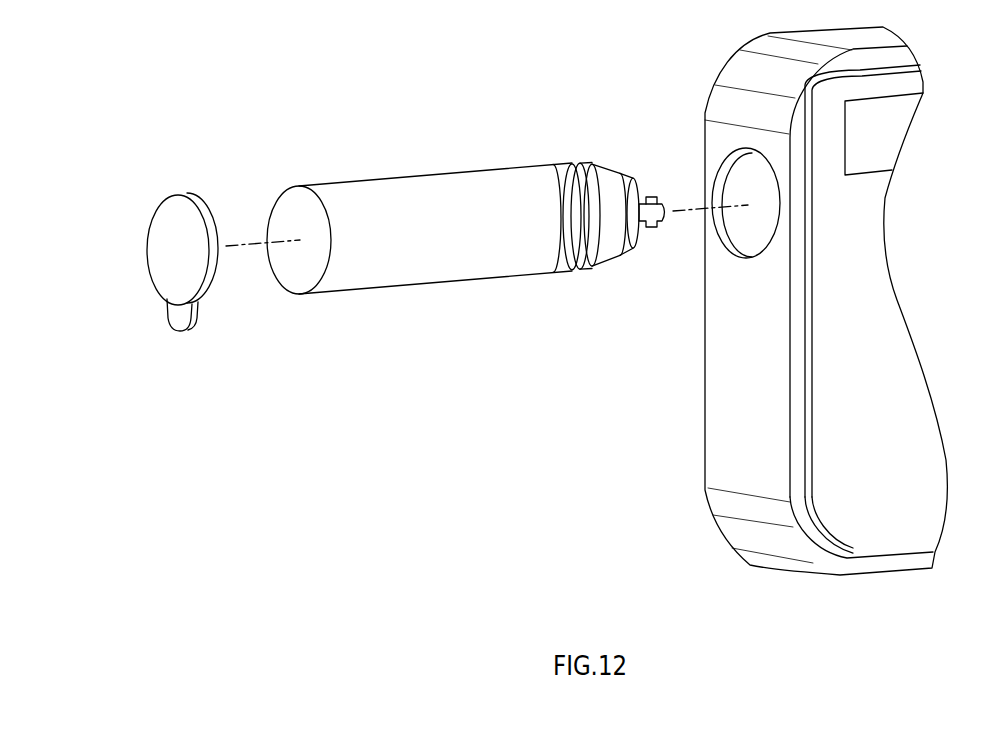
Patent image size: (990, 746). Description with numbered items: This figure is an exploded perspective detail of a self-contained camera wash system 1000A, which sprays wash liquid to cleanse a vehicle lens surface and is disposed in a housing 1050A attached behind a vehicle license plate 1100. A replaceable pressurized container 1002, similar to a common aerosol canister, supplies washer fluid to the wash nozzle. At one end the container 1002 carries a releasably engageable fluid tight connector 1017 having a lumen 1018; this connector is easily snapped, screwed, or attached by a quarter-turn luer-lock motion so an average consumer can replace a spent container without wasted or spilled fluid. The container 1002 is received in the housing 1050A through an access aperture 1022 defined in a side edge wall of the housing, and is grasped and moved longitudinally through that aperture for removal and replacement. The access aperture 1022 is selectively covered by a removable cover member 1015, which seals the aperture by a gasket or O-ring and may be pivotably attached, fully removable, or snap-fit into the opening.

The cover member 1015 is at (160, 245).
The replaceable pressurized container 1002 is at (422, 194).
The releasably engageable fluid tight connector 1017 is at (652, 197).
The lumen 1018 is at (646, 228).
The access aperture 1022 is at (743, 167).
The housing 1050A is at (723, 355).
The camera wash system 1000A is at (814, 320).
The vehicle license plate 1100 is at (910, 522).